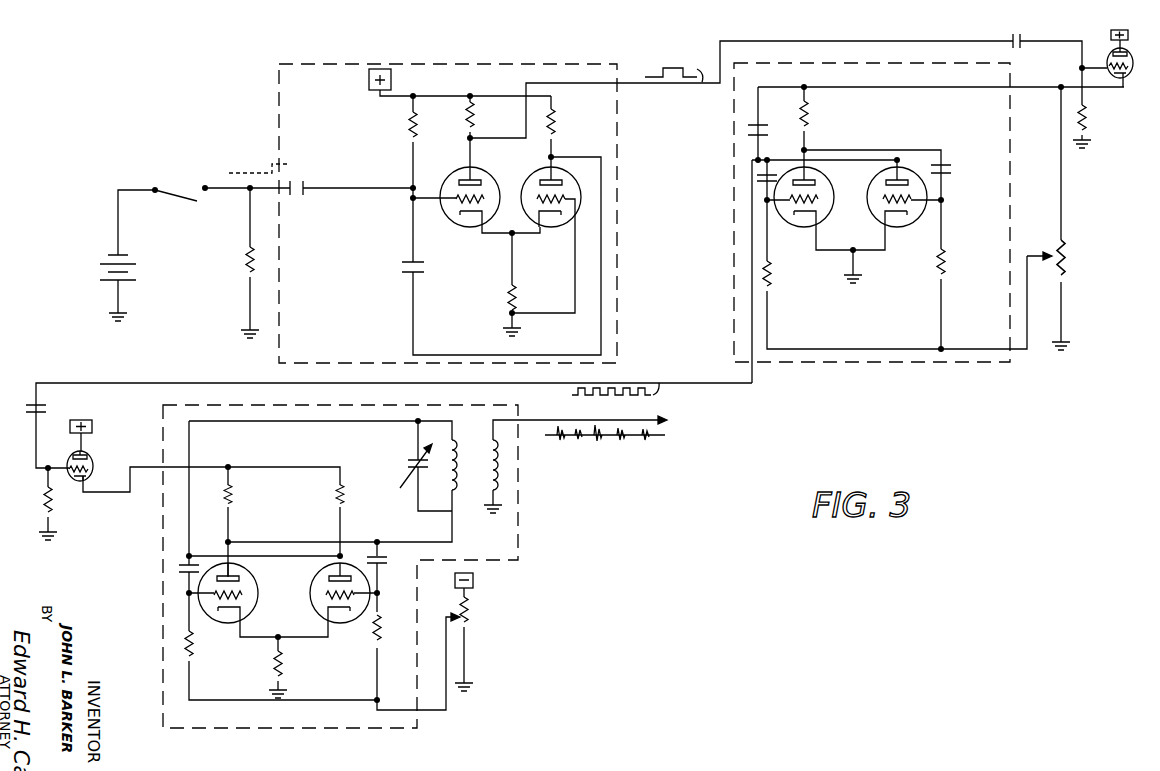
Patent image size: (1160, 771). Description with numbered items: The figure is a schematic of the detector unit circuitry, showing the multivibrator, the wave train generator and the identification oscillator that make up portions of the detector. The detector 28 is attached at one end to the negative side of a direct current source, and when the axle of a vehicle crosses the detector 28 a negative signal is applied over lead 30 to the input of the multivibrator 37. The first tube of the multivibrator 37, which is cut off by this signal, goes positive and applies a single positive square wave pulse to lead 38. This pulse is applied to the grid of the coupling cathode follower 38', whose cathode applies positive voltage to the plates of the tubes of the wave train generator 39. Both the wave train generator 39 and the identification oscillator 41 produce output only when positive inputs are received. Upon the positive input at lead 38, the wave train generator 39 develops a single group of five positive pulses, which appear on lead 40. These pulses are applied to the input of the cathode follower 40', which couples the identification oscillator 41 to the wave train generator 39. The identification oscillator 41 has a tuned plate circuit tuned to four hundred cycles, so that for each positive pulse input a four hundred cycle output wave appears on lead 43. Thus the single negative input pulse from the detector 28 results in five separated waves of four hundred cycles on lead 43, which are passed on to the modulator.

The detector 28 is at (157, 186).
The lead 30 is at (226, 190).
The multivibrator 37 is at (408, 64).
The lead 38 is at (862, 91).
The coupling cathode follower 38' is at (1123, 80).
The wave train generator 39 is at (815, 63).
The lead 40 is at (394, 394).
The cathode follower 40' is at (94, 472).
The identification oscillator 41 is at (391, 727).
The lead 43 is at (645, 417).